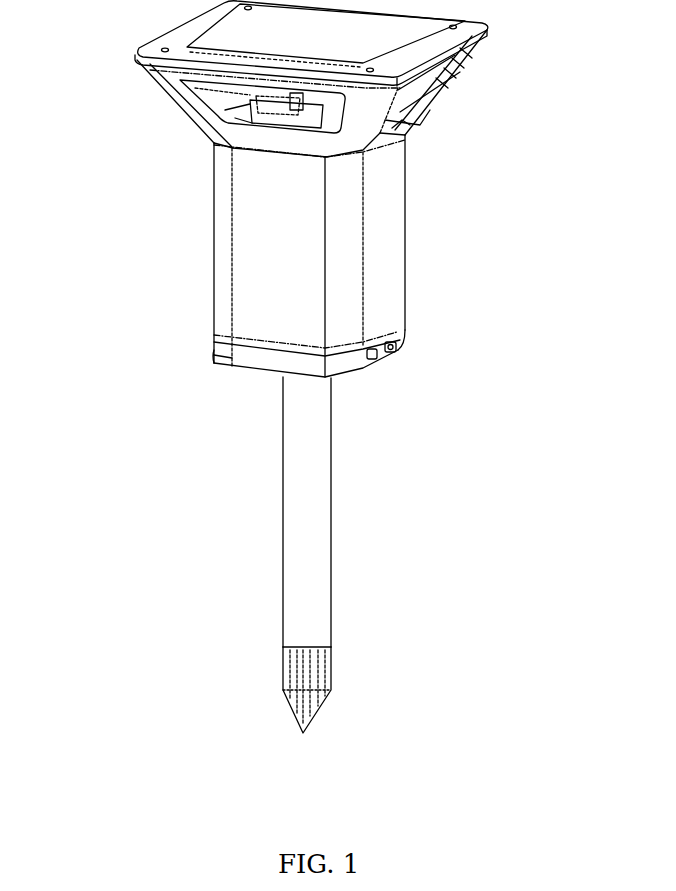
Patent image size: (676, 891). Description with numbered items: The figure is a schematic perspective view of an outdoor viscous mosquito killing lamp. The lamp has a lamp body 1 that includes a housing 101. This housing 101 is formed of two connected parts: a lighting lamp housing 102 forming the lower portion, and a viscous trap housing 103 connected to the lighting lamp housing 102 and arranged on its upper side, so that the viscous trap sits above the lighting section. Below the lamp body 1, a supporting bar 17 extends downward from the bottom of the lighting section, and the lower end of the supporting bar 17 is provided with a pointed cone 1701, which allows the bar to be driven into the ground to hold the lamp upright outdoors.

The lamp body 1 is at (435, 198).
The housing 101 is at (110, 195).
The lighting lamp housing 102 is at (212, 235).
The viscous trap housing 103 is at (182, 102).
The supporting bar 17 is at (330, 513).
The pointed cone 1701 is at (327, 667).